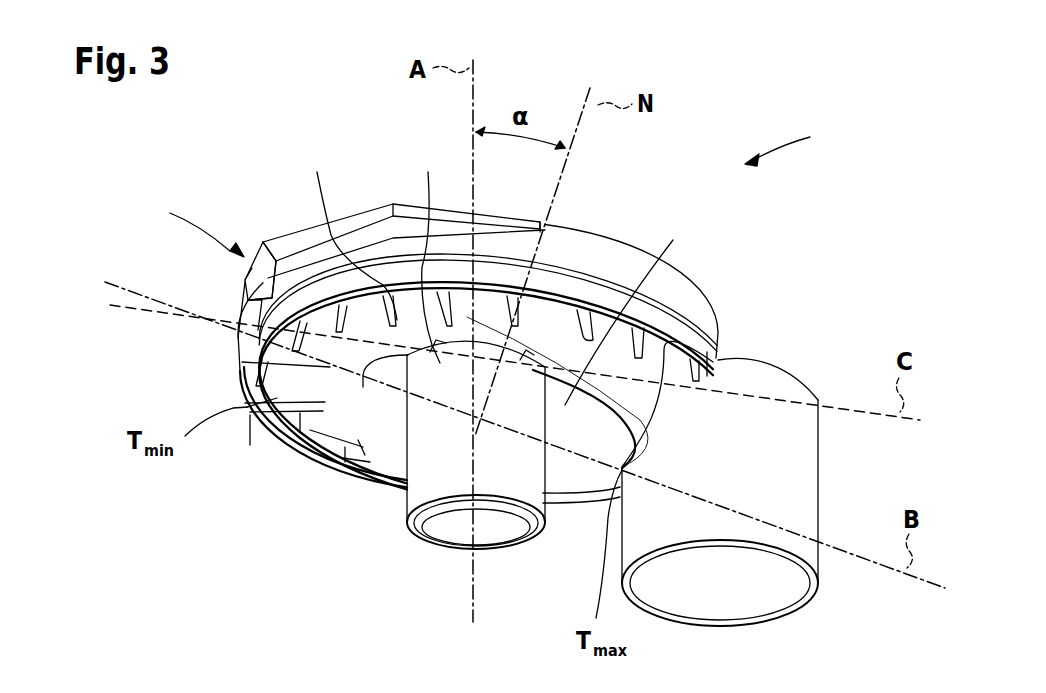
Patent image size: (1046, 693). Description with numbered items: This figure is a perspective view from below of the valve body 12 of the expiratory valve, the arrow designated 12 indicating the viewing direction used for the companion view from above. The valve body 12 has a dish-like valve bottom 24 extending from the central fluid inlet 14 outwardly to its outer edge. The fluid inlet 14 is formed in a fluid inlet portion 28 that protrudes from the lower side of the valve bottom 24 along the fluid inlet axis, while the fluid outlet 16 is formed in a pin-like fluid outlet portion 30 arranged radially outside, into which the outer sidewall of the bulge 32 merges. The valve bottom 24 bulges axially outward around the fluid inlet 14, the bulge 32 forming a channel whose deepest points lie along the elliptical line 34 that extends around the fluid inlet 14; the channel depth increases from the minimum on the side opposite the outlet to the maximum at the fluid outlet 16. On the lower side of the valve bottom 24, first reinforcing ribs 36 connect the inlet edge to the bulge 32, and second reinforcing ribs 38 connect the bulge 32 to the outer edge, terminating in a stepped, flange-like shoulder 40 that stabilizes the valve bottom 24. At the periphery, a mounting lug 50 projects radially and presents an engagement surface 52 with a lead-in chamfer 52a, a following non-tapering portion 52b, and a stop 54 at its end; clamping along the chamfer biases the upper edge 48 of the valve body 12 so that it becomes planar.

The valve body 12 is at (791, 141).
The fluid inlet 14 is at (454, 480).
The fluid outlet 16 is at (760, 596).
The valve bottom 24 is at (430, 324).
The fluid inlet portion 28 is at (502, 483).
The fluid outlet portion 30 is at (706, 475).
The bulge 32 is at (737, 353).
The line of deepest points 34 is at (653, 255).
The first reinforcing ribs 36 is at (429, 254).
The second reinforcing ribs 38 is at (240, 366).
The flange-like shoulder 40 is at (250, 415).
The upper edge 48 is at (606, 235).
The mounting lug 50 is at (193, 224).
The engagement surface 52 is at (371, 209).
The lead-in chamfer 52a is at (373, 214).
The non-tapering portion 52b is at (274, 248).
The stop 54 is at (247, 294).